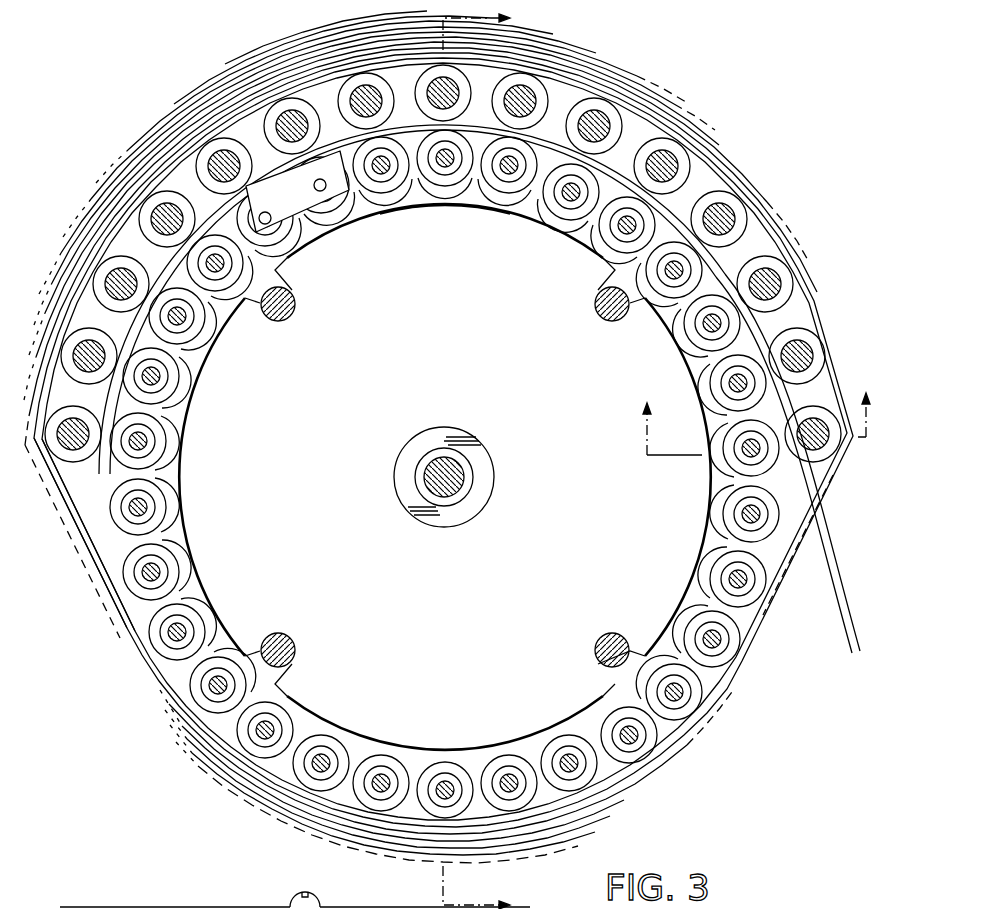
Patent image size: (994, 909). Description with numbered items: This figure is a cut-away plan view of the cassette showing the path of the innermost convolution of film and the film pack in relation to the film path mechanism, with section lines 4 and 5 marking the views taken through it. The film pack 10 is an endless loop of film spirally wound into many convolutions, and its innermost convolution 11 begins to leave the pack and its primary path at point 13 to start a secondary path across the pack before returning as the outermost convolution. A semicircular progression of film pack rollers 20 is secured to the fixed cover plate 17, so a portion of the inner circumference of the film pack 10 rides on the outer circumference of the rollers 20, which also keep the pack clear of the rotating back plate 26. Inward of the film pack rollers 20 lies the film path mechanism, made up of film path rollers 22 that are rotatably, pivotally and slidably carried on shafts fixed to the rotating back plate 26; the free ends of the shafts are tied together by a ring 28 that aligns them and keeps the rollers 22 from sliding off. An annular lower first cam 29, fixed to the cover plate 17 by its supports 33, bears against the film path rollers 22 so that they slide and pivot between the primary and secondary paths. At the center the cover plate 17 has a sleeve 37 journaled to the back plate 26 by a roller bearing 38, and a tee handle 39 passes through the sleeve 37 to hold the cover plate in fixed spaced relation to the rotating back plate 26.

The film pack 10 is at (748, 187).
The innermost convolution 11 is at (818, 518).
The point 13 is at (135, 622).
The cover plate 17 is at (236, 907).
The film pack rollers 20 is at (663, 132).
The film path rollers 22 is at (592, 248).
The rotating back plate 26 is at (306, 462).
The ring 28 is at (305, 213).
The annular lower first cam 29 is at (332, 232).
The supports 33 is at (297, 312).
The sleeve 37 is at (415, 490).
The roller bearing 38 is at (493, 448).
The tee handle 39 is at (413, 470).
The section line 4 is at (755, 404).
The section line 5 is at (487, 458).